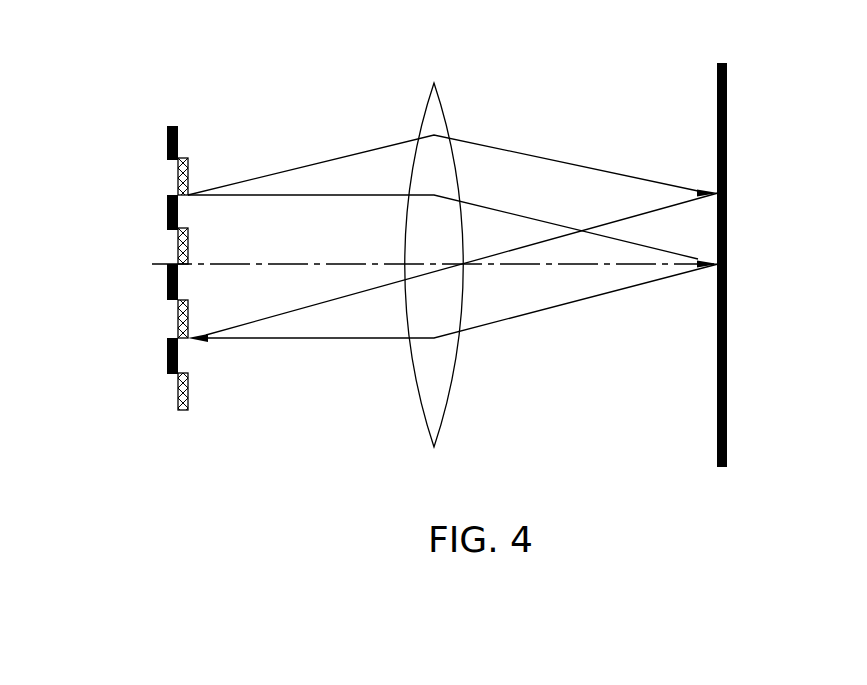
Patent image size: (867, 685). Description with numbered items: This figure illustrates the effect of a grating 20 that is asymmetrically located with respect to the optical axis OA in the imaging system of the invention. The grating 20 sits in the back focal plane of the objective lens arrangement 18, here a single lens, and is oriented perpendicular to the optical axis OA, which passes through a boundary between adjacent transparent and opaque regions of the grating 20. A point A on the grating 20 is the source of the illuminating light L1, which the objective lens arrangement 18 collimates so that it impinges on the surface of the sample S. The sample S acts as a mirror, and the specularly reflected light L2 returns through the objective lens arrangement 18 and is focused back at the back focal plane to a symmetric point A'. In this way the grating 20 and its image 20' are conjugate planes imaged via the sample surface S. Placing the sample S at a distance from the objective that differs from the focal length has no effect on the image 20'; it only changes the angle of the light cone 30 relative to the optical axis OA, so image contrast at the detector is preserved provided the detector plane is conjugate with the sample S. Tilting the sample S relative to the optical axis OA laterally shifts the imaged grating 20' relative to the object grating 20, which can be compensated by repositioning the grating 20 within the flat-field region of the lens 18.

The grating 20 is at (112, 236).
The image of the grating 20' is at (250, 254).
The point on the grating A is at (112, 196).
The symmetric point A' is at (112, 341).
The objective lens arrangement 18 is at (434, 83).
The sample S is at (691, 82).
The illuminating light L1 is at (520, 215).
The specularly reflected light L2 is at (453, 291).
The optical axis OA is at (282, 264).
The light cone 30 is at (308, 325).